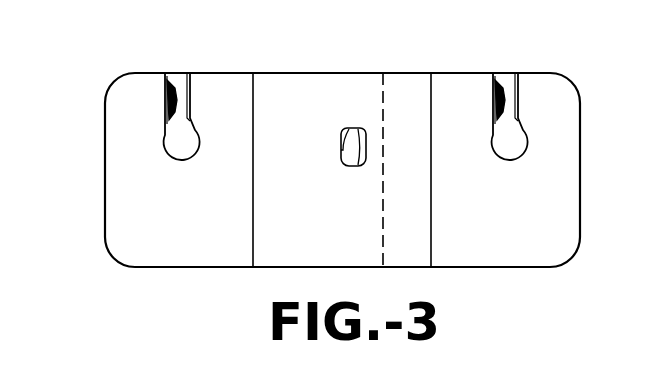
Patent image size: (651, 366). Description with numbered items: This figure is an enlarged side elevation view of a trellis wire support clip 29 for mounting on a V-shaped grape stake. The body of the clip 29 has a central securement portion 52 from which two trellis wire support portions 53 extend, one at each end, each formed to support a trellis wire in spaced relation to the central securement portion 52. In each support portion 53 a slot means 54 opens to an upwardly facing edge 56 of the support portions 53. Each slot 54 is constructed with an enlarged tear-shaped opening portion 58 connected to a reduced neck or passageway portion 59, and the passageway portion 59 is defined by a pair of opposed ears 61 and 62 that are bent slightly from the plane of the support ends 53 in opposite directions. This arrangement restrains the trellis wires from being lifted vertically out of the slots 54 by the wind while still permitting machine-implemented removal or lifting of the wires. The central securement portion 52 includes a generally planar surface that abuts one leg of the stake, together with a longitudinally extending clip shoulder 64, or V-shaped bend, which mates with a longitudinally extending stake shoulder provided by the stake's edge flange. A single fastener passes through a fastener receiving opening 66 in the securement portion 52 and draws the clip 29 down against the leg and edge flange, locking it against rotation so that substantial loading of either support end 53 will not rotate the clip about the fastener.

The trellis wire support clip 29 is at (121, 275).
The central securement portion 52 is at (293, 221).
The trellis wire support portions 53 is at (130, 215).
The slot means 54 is at (182, 67).
The upwardly facing edge 56 is at (223, 73).
The enlarged tear-shaped opening portion 58 is at (180, 148).
The reduced neck or passageway portion 59 is at (177, 103).
The ear 61 is at (190, 90).
The ear 62 is at (165, 78).
The clip shoulder 64 is at (431, 218).
The fastener receiving opening 66 is at (353, 128).